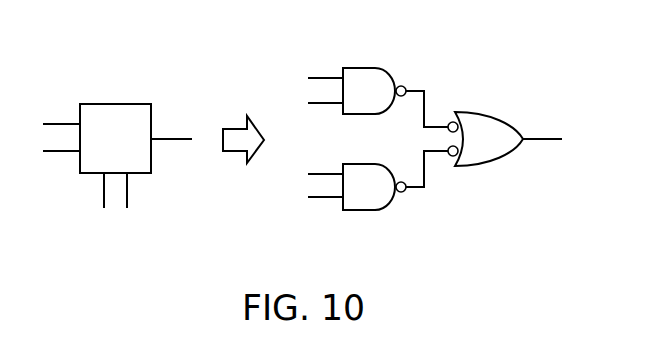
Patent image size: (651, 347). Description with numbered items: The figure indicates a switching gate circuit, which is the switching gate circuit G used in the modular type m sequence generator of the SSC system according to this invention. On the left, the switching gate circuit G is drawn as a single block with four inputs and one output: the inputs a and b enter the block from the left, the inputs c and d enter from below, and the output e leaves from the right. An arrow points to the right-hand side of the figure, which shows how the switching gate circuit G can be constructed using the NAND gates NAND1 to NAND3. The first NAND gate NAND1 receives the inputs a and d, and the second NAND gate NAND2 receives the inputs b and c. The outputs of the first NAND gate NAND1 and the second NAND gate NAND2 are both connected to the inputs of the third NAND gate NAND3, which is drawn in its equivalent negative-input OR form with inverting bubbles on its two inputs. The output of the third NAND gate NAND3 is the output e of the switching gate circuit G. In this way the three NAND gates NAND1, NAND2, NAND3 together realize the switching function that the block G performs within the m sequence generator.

The switching gate circuit G is at (115, 138).
The input a is at (193, 92).
The input b is at (193, 165).
The input c is at (215, 198).
The input d is at (235, 156).
The output e is at (356, 126).
The first NAND gate NAND1 is at (395, 82).
The second NAND gate NAND2 is at (395, 199).
The third NAND gate NAND3 is at (491, 125).